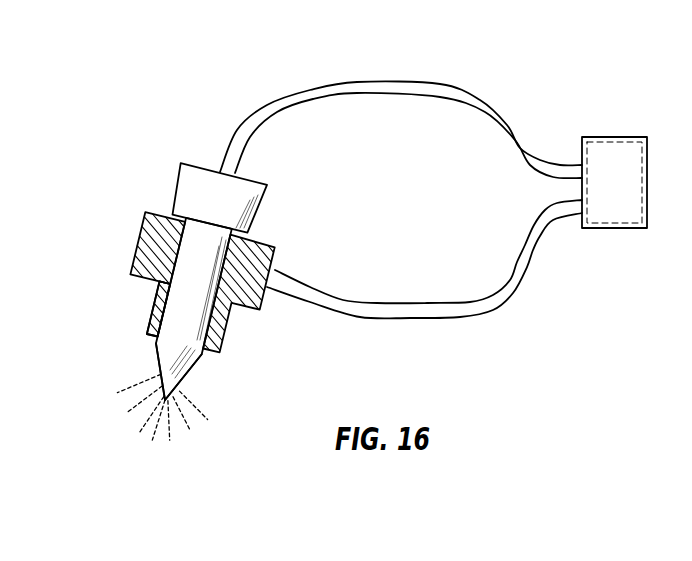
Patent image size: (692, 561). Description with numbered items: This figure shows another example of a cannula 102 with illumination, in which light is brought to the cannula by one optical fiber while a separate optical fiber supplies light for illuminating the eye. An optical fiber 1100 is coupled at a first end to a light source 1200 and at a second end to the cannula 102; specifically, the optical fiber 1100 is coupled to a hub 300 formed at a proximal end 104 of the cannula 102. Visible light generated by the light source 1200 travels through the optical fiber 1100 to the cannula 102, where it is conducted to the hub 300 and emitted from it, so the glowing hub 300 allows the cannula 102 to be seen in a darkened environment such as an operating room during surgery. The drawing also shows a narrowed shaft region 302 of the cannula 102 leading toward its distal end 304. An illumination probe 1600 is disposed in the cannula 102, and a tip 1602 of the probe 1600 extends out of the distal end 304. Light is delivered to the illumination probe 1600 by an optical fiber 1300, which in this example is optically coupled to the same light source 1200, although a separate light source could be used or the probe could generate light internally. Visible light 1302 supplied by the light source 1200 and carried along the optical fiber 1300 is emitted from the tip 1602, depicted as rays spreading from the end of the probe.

The cannula 102 is at (152, 184).
The proximal end 104 is at (130, 227).
The hub 300 is at (133, 260).
The shaft sleeve 302 is at (157, 295).
The distal end 304 is at (138, 325).
The illumination probe 1600 is at (275, 211).
The tip 1602 is at (196, 371).
The visible light 1302 is at (150, 443).
The optical fiber 1300 is at (357, 82).
The optical fiber 1100 is at (407, 303).
The light source 1200 is at (613, 137).